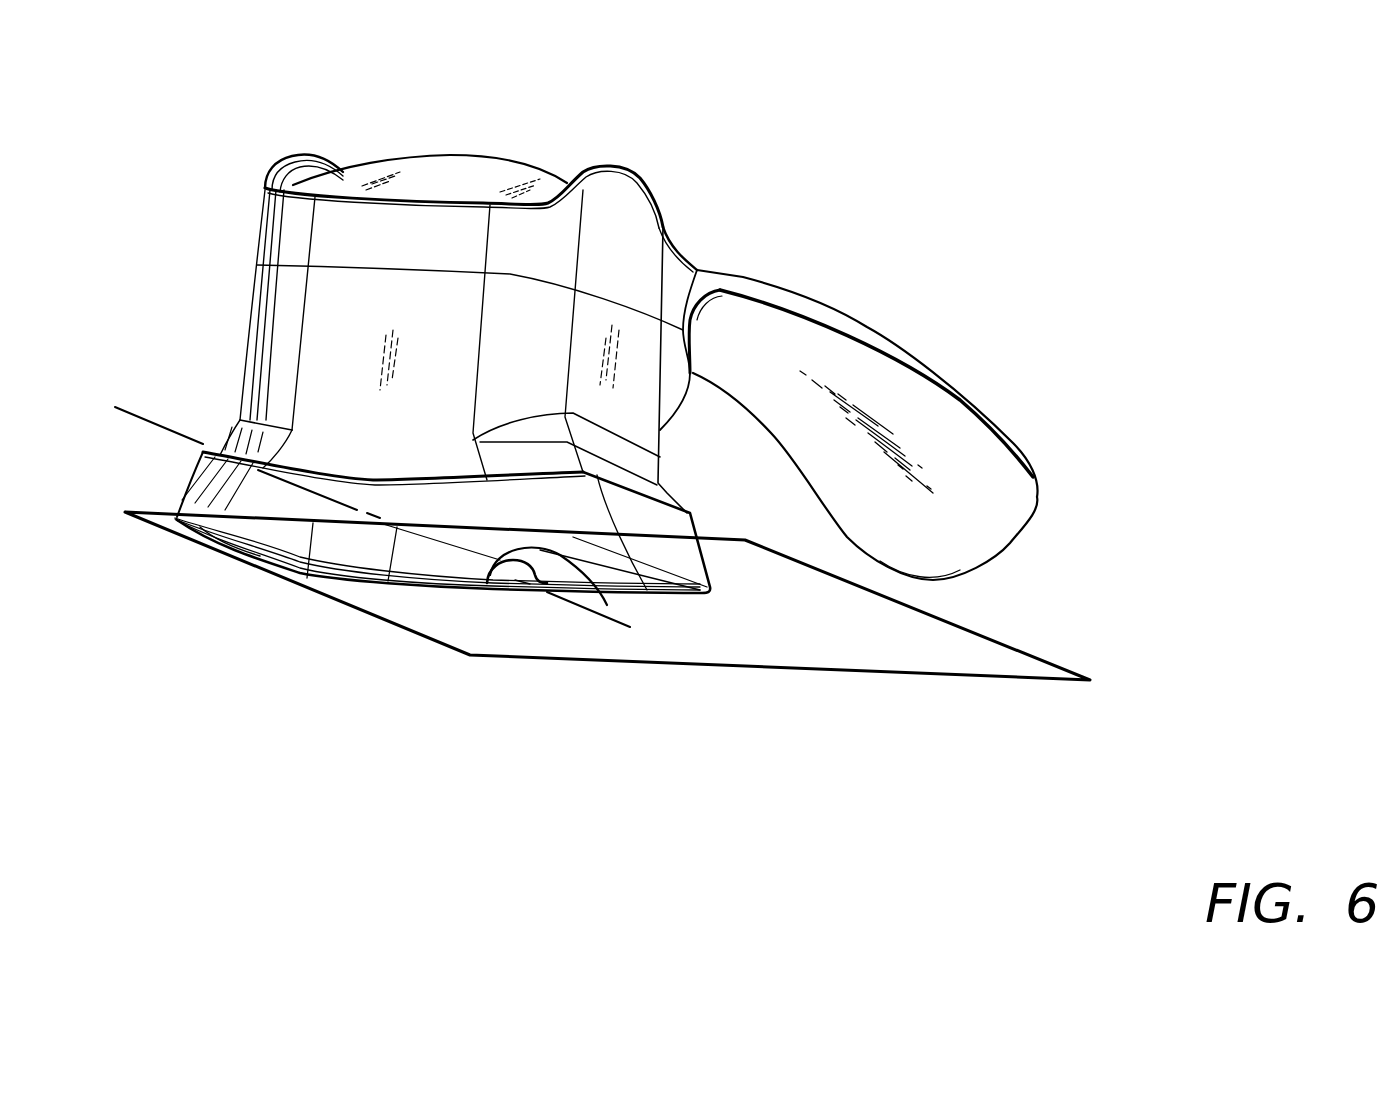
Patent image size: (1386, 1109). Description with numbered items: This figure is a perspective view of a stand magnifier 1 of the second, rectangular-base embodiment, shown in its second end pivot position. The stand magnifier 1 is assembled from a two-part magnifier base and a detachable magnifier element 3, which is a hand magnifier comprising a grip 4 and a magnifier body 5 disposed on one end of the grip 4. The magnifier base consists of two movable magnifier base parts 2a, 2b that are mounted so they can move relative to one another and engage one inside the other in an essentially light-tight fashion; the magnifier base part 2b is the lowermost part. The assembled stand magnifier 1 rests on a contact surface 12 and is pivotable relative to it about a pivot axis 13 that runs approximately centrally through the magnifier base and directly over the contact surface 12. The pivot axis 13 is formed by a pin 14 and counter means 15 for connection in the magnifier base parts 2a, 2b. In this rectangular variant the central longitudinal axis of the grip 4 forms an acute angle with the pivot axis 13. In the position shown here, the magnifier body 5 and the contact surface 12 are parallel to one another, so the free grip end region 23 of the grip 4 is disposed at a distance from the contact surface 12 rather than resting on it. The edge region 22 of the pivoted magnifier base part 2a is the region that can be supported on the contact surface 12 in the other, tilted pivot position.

The stand magnifier 1 is at (590, 90).
The magnifier base part 2a is at (262, 298).
The magnifier base part 2b is at (190, 486).
The magnifier element 3 is at (785, 269).
The grip 4 is at (867, 325).
The magnifier body 5 is at (462, 192).
The contact surface 12 is at (988, 667).
The pivot axis 13 is at (148, 410).
The pin 14 is at (505, 588).
The counter means 15 is at (607, 605).
The edge region 22 is at (238, 562).
The free grip end region 23 is at (1003, 552).